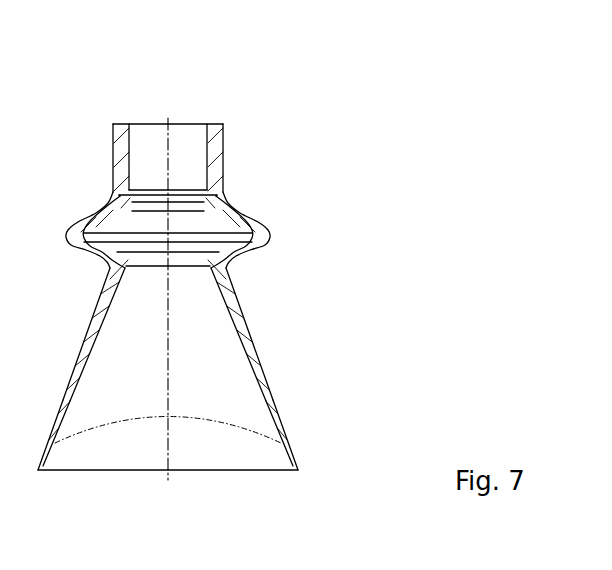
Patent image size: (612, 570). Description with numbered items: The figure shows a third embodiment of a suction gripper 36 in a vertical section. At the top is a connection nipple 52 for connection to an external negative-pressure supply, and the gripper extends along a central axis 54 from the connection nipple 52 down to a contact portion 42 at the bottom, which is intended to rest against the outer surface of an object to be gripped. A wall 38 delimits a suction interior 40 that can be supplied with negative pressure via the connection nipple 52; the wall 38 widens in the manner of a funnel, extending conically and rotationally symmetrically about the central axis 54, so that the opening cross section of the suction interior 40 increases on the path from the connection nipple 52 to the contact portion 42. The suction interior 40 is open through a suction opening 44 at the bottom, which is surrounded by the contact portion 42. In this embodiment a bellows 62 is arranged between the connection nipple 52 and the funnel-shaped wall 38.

The suction gripper 36 is at (164, 63).
The wall 38 is at (234, 311).
The suction interior 40 is at (145, 380).
The contact portion 42 is at (313, 438).
The suction opening 44 is at (97, 472).
The connection nipple 52 is at (254, 160).
The central axis 54 is at (171, 139).
The bellows 62 is at (286, 238).